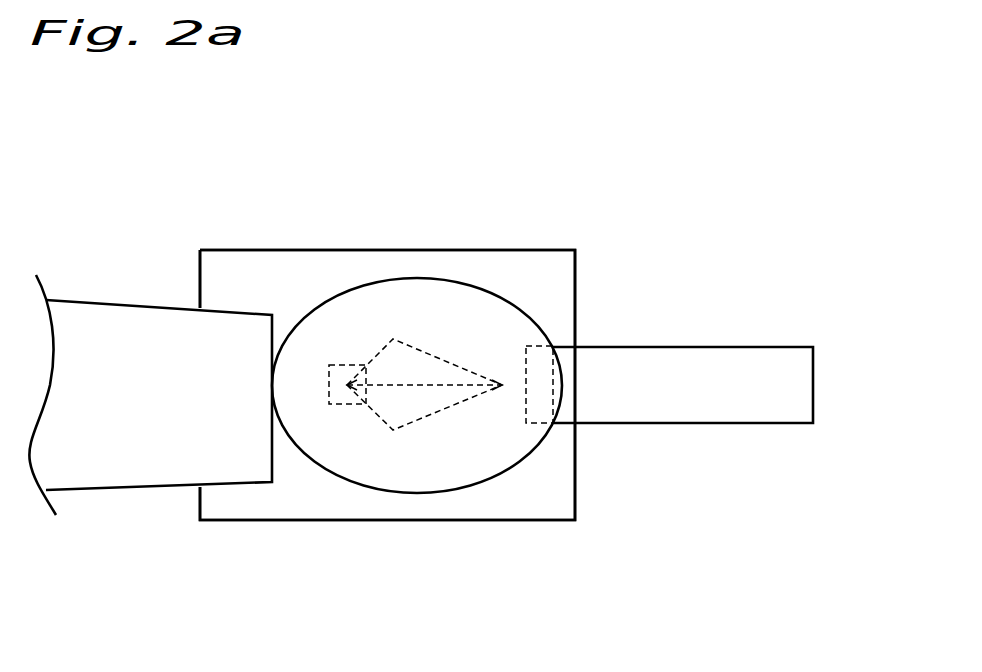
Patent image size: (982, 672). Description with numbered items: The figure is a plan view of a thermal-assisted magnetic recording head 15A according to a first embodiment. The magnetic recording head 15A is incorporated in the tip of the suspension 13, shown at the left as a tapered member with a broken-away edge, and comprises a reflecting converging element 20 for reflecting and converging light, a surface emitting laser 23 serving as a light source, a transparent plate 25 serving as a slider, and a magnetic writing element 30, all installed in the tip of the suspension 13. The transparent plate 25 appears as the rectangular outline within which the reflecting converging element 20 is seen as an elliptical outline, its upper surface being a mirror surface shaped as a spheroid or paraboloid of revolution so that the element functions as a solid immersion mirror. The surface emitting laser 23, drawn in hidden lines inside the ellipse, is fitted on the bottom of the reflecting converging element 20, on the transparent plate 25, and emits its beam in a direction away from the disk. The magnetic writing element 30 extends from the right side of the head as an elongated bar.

The thermal-assisted magnetic recording head 15A is at (213, 176).
The reflecting converging element 20 is at (355, 287).
The surface emitting laser 23 is at (348, 402).
The transparent plate 25 is at (457, 250).
The magnetic writing element 30 is at (640, 336).
The suspension 13 is at (112, 490).